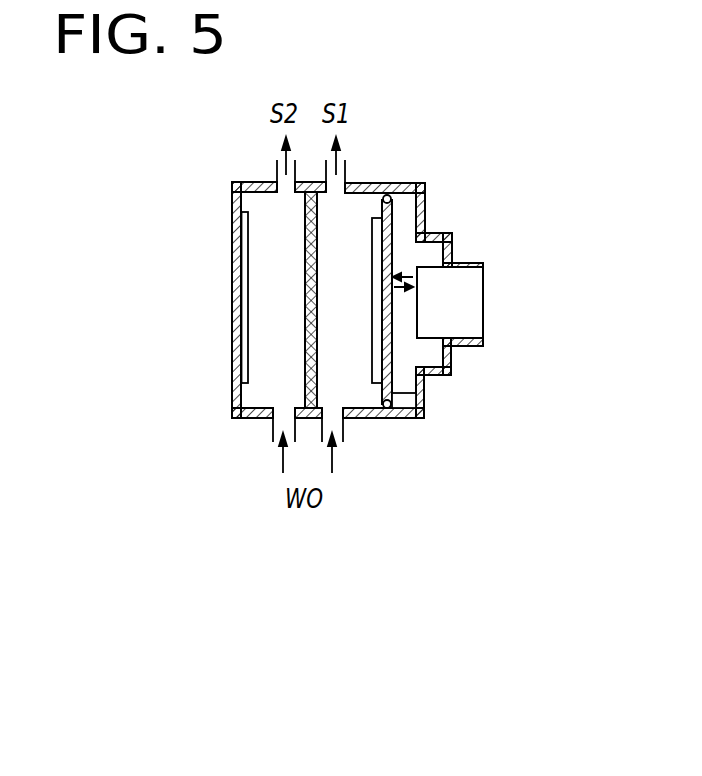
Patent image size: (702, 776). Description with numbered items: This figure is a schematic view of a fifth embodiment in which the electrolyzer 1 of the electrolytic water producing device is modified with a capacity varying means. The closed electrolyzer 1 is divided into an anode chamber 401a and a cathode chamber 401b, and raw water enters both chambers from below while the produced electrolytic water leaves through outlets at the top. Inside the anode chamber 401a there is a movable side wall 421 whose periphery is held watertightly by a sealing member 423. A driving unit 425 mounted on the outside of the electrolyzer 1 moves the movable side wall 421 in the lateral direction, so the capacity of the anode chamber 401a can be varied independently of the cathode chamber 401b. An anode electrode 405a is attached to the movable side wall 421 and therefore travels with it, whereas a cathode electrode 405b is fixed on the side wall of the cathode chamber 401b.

The electrolyzer 1 is at (232, 342).
The anode chamber 401a is at (343, 288).
The cathode chamber 401b is at (263, 285).
The anode electrode 405a is at (375, 252).
The cathode electrode 405b is at (245, 240).
The movable side wall 421 is at (390, 348).
The sealing member 423 is at (400, 423).
The driving unit 425 is at (460, 306).